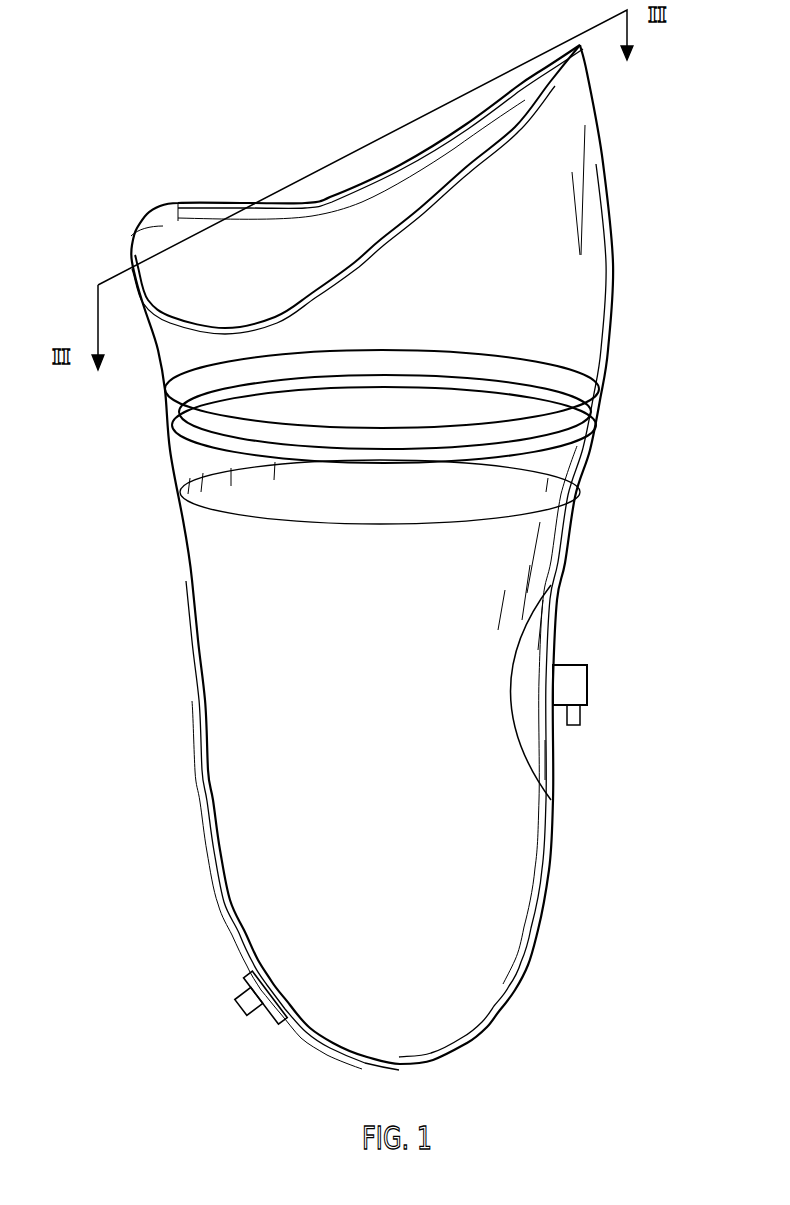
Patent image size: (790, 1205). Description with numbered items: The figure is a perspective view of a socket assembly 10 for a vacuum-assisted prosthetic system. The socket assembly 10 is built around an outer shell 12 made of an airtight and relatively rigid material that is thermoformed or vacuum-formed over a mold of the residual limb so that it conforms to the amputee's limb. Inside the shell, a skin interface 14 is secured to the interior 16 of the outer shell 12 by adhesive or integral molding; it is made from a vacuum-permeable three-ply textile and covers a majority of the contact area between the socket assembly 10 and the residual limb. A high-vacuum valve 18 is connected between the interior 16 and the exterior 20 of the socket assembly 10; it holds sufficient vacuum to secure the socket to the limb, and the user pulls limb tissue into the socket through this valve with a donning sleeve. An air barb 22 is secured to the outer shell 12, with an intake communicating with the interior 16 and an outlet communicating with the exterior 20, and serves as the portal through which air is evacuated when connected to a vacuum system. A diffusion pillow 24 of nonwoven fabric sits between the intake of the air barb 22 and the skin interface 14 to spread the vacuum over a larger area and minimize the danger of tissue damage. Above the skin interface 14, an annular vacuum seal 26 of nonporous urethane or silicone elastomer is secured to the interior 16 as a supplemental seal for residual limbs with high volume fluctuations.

The socket assembly 10 is at (201, 112).
The outer shell 12 is at (588, 170).
The skin interface 14 is at (207, 578).
The interior 16 is at (178, 210).
The high-vacuum valve 18 is at (248, 995).
The exterior 20 is at (206, 775).
The air barb 22 is at (585, 682).
The diffusion pillow 24 is at (548, 768).
The vacuum seal 26 is at (598, 427).